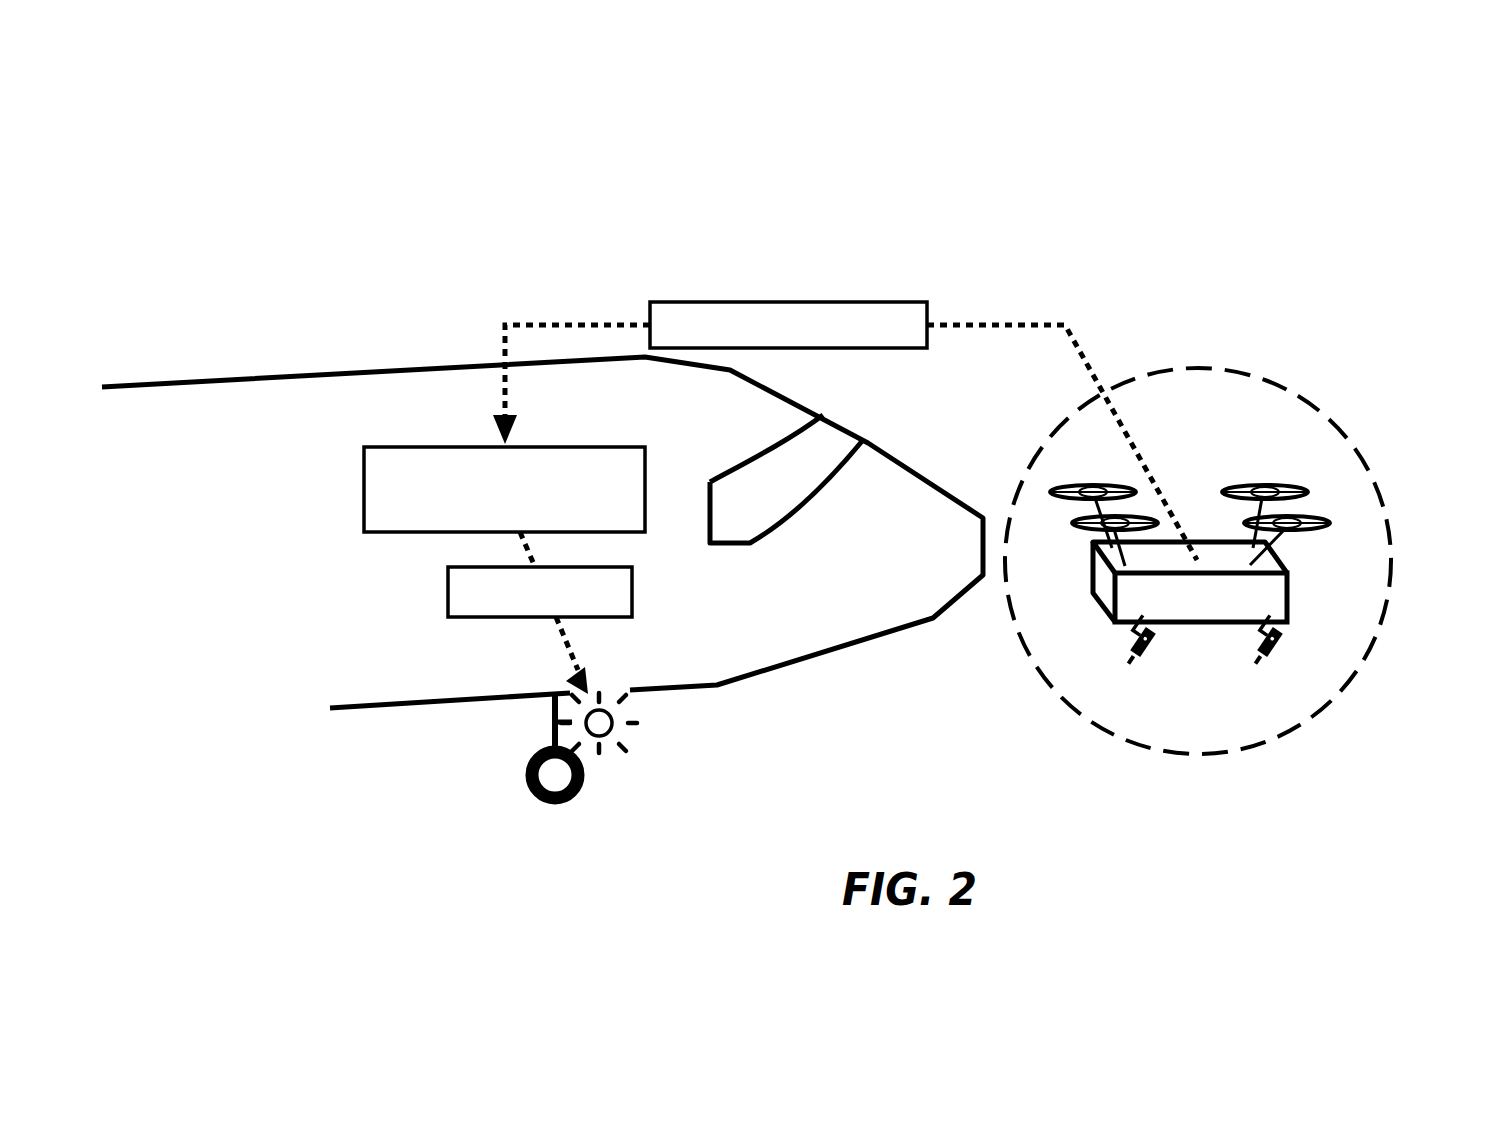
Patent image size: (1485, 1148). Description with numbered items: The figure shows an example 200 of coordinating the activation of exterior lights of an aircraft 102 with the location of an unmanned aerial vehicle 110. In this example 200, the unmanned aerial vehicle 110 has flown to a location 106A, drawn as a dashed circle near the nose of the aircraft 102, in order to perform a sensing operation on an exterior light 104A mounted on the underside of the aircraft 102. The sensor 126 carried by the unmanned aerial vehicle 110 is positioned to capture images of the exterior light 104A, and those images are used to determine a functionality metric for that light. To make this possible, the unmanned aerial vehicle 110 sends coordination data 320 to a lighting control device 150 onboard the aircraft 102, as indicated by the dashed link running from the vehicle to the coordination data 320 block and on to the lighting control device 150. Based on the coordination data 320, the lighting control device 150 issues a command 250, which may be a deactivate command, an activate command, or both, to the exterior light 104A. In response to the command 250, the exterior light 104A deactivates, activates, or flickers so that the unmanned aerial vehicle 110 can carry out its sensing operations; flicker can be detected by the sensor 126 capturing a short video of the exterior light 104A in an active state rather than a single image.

The example of coordinating activation of exterior lights 200 is at (1135, 123).
The aircraft 102 is at (392, 368).
The exterior light 104A is at (612, 732).
The lighting control device 150 is at (504, 489).
The command 250 is at (540, 613).
The coordination data 320 is at (845, 431).
The location 106A is at (1357, 667).
The unmanned aerial vehicle 110 is at (1288, 585).
The sensor 126 is at (1152, 652).